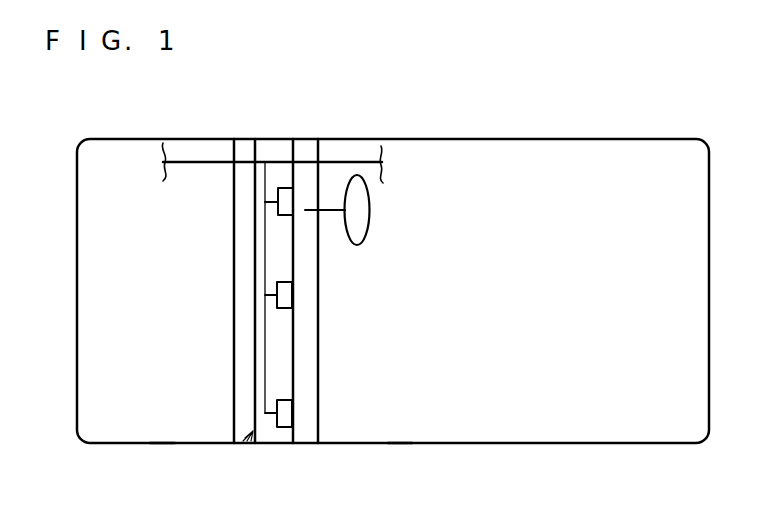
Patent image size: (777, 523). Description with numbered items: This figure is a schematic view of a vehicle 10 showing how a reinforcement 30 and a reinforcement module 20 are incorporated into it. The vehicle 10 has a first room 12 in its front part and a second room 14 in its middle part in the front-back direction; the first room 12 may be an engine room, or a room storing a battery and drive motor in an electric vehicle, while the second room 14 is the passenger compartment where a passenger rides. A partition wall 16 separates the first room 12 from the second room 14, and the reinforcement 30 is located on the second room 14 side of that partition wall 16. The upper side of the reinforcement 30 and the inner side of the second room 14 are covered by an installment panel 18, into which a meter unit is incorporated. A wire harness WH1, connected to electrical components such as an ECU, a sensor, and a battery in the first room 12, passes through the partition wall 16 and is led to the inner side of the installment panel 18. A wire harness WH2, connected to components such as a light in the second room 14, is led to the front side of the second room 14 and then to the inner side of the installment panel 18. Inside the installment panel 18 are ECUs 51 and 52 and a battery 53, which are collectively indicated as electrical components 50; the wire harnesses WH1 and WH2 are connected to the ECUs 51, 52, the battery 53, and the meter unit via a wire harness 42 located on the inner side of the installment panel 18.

The vehicle 10 is at (490, 140).
The wire harness WH1 is at (183, 160).
The wire harness WH2 is at (346, 160).
The first room 12 is at (170, 442).
The second room 14 is at (392, 442).
The partition wall 16 is at (233, 423).
The installment panel 18 is at (293, 372).
The reinforcement module 20 is at (248, 442).
The reinforcement 30 is at (255, 355).
The wire harness 42 is at (265, 250).
The connectors 50 is at (337, 210).
The ECU 51 is at (283, 308).
The ECU 52 is at (278, 202).
The battery 53 is at (280, 428).